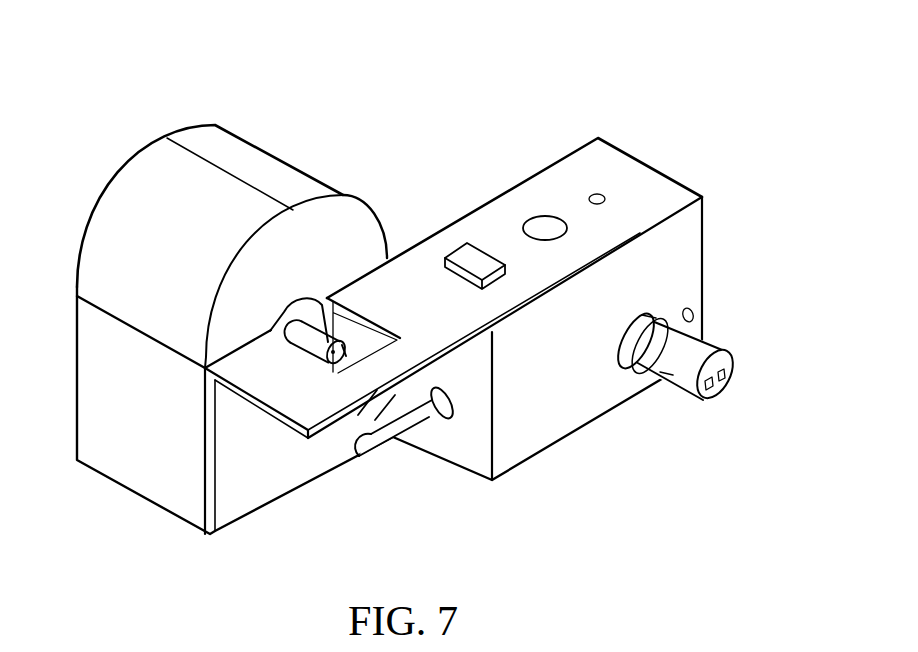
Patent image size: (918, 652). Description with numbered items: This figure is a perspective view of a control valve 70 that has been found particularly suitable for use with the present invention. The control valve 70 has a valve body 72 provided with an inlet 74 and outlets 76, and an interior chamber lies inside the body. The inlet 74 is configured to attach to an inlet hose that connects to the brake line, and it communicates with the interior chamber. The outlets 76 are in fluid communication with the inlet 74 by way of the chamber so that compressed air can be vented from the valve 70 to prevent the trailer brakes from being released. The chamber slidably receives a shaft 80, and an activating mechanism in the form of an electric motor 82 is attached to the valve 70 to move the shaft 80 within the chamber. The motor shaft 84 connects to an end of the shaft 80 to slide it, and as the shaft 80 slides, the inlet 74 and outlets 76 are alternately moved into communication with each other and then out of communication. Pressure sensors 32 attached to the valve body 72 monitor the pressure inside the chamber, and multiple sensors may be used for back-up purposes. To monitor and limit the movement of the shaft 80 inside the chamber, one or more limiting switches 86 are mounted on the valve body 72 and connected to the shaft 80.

The control valve 70 is at (548, 73).
The valve body 72 is at (603, 160).
The inlet 74 is at (547, 223).
The outlets 76 is at (692, 314).
The shaft 80 is at (387, 435).
The electric motor 82 is at (260, 160).
The motor shaft 84 is at (304, 297).
The limiting switches 86 is at (480, 247).
The pressure sensors 32 is at (698, 360).